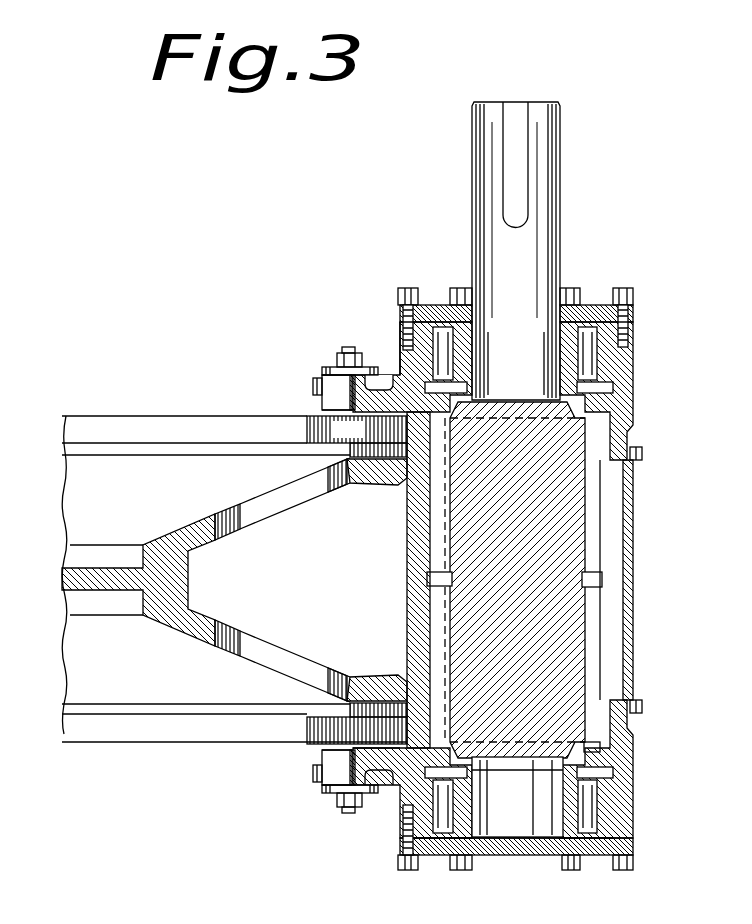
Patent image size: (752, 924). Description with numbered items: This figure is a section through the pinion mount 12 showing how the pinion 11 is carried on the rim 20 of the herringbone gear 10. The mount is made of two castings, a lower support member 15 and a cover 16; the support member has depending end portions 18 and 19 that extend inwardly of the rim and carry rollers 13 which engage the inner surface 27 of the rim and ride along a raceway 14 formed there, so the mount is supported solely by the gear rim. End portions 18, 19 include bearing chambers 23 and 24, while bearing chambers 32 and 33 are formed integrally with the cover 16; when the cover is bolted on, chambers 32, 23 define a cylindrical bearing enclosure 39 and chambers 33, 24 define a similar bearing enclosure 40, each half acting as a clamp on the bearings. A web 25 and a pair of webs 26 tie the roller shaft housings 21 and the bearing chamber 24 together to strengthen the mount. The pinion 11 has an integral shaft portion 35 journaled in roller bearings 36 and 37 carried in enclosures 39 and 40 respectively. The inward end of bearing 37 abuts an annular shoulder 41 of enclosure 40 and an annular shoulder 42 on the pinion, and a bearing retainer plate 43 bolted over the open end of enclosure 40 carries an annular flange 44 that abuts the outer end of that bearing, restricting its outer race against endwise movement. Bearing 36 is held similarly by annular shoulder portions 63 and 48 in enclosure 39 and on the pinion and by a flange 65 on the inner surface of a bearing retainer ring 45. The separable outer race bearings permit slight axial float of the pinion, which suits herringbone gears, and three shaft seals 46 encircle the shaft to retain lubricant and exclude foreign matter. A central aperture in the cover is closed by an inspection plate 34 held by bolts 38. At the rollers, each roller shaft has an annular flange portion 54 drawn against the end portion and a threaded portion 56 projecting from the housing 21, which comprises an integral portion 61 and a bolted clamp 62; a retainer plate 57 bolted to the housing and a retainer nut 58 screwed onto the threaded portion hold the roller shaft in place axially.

The herringbone gear 10 is at (234, 582).
The pinion 11 is at (544, 580).
The pinion mount 12 is at (510, 563).
The rollers 13 is at (307, 429).
The raceway 14 is at (213, 743).
The lower support member 15 is at (400, 331).
The cover 16 is at (633, 381).
The end portion 18 is at (398, 310).
The end portion 19 is at (400, 829).
The rim 20 is at (469, 580).
The roller shaft housing 21 is at (318, 577).
The bearing chamber 23 is at (400, 349).
The bearing chamber 24 is at (400, 806).
The web 25 is at (350, 390).
The webs 26 is at (381, 386).
The inner surface 27 is at (380, 431).
The bearing chamber 32 is at (633, 328).
The bearing chamber 33 is at (515, 769).
The inspection plate 34 is at (651, 580).
The shaft portion 35 is at (534, 251).
The roller bearing 36 is at (590, 330).
The roller bearing 37 is at (633, 772).
The bolts 38 is at (643, 455).
The bearing enclosure 39 is at (633, 304).
The bearing enclosure 40 is at (516, 825).
The annular shoulder 41 is at (593, 744).
The annular shoulder 42 is at (531, 776).
The bearing retainer plate 43 is at (491, 858).
The annular flange 44 is at (434, 860).
The bearing retainer ring 45 is at (587, 322).
The shaft seals 46 is at (472, 313).
The annular shoulder portion 48 is at (523, 382).
The annular flange portion 54 is at (348, 409).
The threaded portion 56 is at (348, 347).
The retainer plate 57 is at (322, 370).
The retainer nut 58 is at (337, 360).
The portion 61 is at (322, 377).
The clamp 62 is at (313, 388).
The annular shoulder portion 63 is at (615, 388).
The flange 65 is at (441, 305).